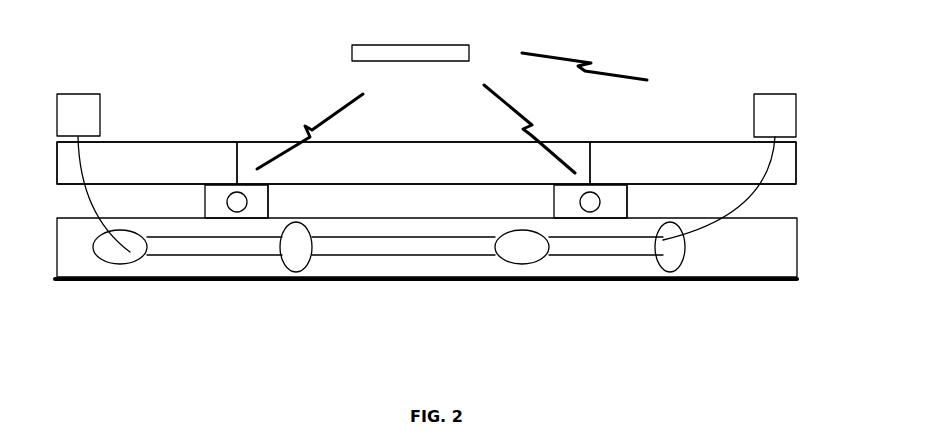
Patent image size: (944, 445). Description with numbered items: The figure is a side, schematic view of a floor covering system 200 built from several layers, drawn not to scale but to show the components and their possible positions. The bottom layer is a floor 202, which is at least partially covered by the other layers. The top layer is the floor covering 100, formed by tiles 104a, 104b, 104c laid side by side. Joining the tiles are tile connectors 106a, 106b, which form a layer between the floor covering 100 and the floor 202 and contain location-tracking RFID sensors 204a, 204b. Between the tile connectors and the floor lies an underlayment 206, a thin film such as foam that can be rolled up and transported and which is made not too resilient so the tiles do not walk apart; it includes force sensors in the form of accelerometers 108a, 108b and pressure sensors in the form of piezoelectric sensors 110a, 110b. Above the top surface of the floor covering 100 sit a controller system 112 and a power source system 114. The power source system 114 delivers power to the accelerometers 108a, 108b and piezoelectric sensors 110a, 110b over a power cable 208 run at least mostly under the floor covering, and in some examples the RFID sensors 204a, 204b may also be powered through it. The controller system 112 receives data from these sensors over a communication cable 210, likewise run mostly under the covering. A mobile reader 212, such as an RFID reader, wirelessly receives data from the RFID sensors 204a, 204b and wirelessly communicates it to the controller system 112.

The floor covering 100 is at (797, 163).
The tile 104a is at (181, 133).
The tile 104b is at (404, 133).
The tile 104c is at (659, 141).
The tile connector 106a is at (269, 202).
The tile connector 106b is at (628, 202).
The accelerometer 108a is at (302, 268).
The accelerometer 108b is at (670, 272).
The piezoelectric sensor 110a is at (113, 265).
The piezoelectric sensor 110b is at (512, 262).
The controller system 112 is at (754, 94).
The power source system 114 is at (100, 93).
The floor covering system 200 is at (225, 345).
The floor 202 is at (797, 280).
The RFID sensor 204a is at (220, 202).
The RFID sensor 204b is at (578, 202).
The underlayment 206 is at (798, 252).
The power cable 208 is at (601, 263).
The communication cable 210 is at (752, 196).
The reader 212 is at (352, 45).